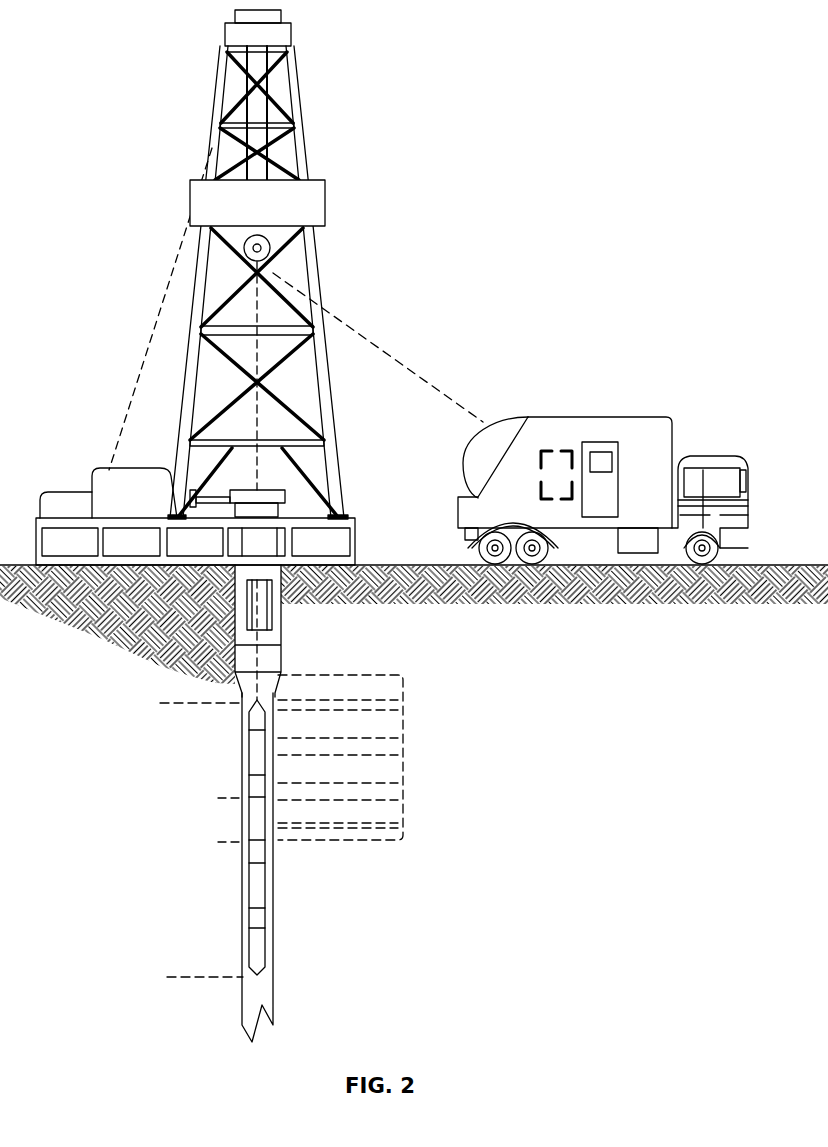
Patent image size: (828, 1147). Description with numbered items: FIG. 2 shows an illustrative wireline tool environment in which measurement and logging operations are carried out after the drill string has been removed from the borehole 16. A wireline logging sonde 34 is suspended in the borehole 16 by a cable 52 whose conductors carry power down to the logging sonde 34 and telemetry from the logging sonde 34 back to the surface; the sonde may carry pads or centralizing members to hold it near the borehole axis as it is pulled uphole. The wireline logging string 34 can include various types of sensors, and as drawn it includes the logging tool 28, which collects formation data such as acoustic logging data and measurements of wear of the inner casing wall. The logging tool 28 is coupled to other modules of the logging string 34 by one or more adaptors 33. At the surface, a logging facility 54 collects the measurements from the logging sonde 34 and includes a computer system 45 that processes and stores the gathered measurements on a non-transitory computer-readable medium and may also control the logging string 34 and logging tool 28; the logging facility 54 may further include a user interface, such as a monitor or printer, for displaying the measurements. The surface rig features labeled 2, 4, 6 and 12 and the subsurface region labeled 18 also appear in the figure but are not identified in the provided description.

The drilling rig platform 2 is at (357, 540).
The derrick 4 is at (320, 283).
The hoisting system 6 is at (241, 252).
The top drive 12 is at (280, 490).
The borehole 16 is at (241, 727).
The subterranean formation 18 is at (403, 675).
The logging tool 28 is at (218, 798).
The adaptors 33 is at (257, 790).
The wireline logging sonde 34 is at (160, 703).
The computer system 45 is at (568, 449).
The cable 52 is at (376, 342).
The logging facility 54 is at (597, 417).